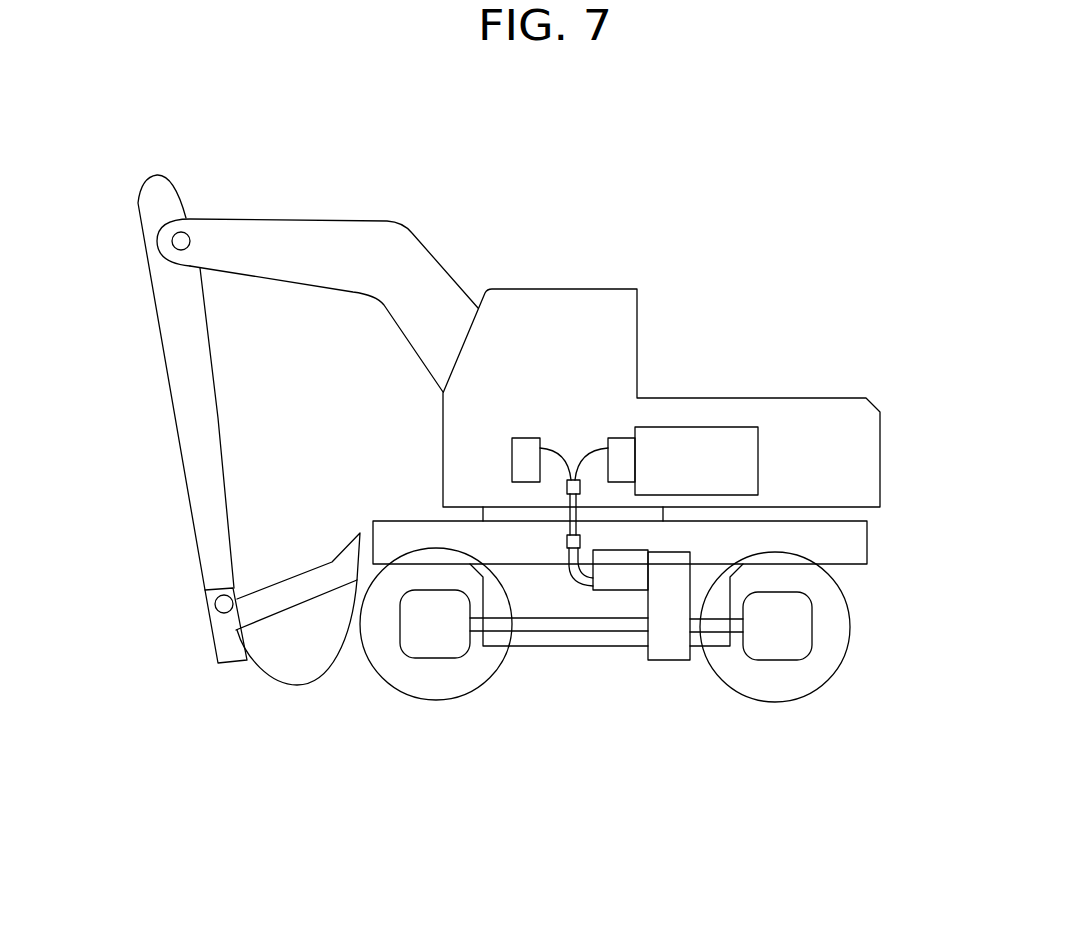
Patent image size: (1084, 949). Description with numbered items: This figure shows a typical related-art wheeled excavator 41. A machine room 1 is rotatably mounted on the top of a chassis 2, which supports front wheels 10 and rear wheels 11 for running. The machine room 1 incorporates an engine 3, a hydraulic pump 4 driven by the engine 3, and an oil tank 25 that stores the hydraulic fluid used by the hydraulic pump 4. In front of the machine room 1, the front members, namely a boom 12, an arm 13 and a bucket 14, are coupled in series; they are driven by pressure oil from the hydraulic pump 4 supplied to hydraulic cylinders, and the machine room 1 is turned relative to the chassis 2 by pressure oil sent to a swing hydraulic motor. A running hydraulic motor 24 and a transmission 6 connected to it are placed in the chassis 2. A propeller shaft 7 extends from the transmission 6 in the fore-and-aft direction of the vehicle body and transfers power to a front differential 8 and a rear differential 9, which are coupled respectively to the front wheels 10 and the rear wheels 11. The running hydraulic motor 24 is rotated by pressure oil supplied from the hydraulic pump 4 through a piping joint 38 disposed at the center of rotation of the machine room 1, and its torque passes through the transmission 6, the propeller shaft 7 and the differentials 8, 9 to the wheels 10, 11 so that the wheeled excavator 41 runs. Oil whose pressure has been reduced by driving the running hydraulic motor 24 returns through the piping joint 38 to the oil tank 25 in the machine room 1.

The machine room 1 is at (787, 420).
The chassis 2 is at (848, 567).
The engine 3 is at (722, 450).
The hydraulic pump 4 is at (620, 457).
The transmission 6 is at (687, 660).
The propeller shaft 7 is at (575, 628).
The front differential 8 is at (418, 652).
The rear differential 9 is at (787, 652).
The front wheels 10 is at (448, 700).
The rear wheels 11 is at (778, 702).
The boom 12 is at (358, 250).
The arm 13 is at (170, 203).
The bucket 14 is at (270, 675).
The running hydraulic motor 24 is at (608, 583).
The oil tank 25 is at (518, 447).
The piping joint 38 is at (570, 521).
The wheeled excavator 41 is at (752, 143).